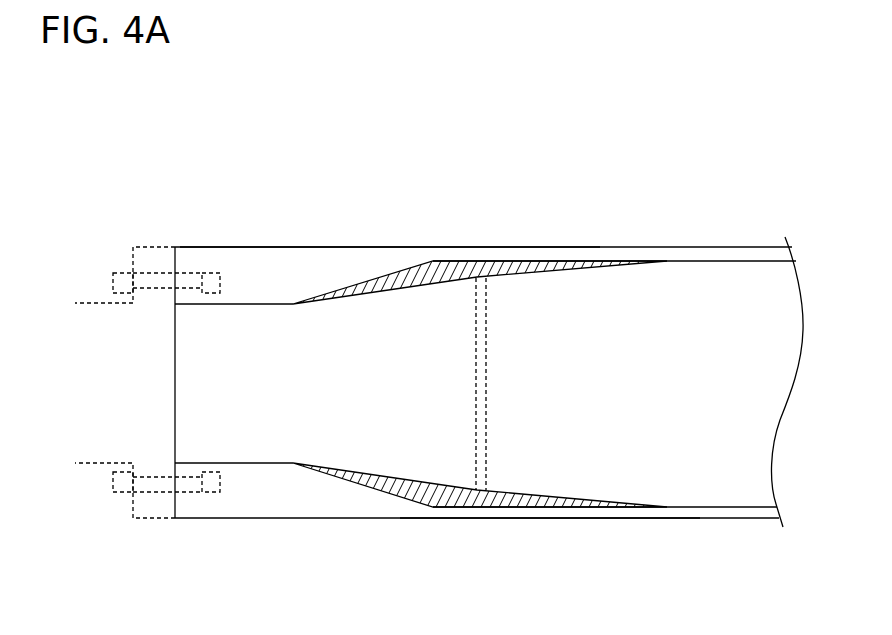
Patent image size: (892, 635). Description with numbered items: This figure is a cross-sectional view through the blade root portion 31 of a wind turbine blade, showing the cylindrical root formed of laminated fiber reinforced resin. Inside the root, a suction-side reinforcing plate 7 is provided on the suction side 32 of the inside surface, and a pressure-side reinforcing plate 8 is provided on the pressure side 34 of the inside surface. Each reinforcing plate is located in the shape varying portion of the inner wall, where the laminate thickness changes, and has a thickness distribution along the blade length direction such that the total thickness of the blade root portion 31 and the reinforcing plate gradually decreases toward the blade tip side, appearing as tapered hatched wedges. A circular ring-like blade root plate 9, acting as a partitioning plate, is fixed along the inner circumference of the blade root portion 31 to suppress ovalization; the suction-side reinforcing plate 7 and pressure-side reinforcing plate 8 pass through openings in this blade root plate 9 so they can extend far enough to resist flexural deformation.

The blade root portion 31 is at (332, 247).
The suction side 32 is at (565, 219).
The suction-side reinforcing plate 7 is at (420, 283).
The pressure-side reinforcing plate 8 is at (508, 491).
The blade root plate 9 is at (486, 366).
The pressure side 34 is at (595, 546).